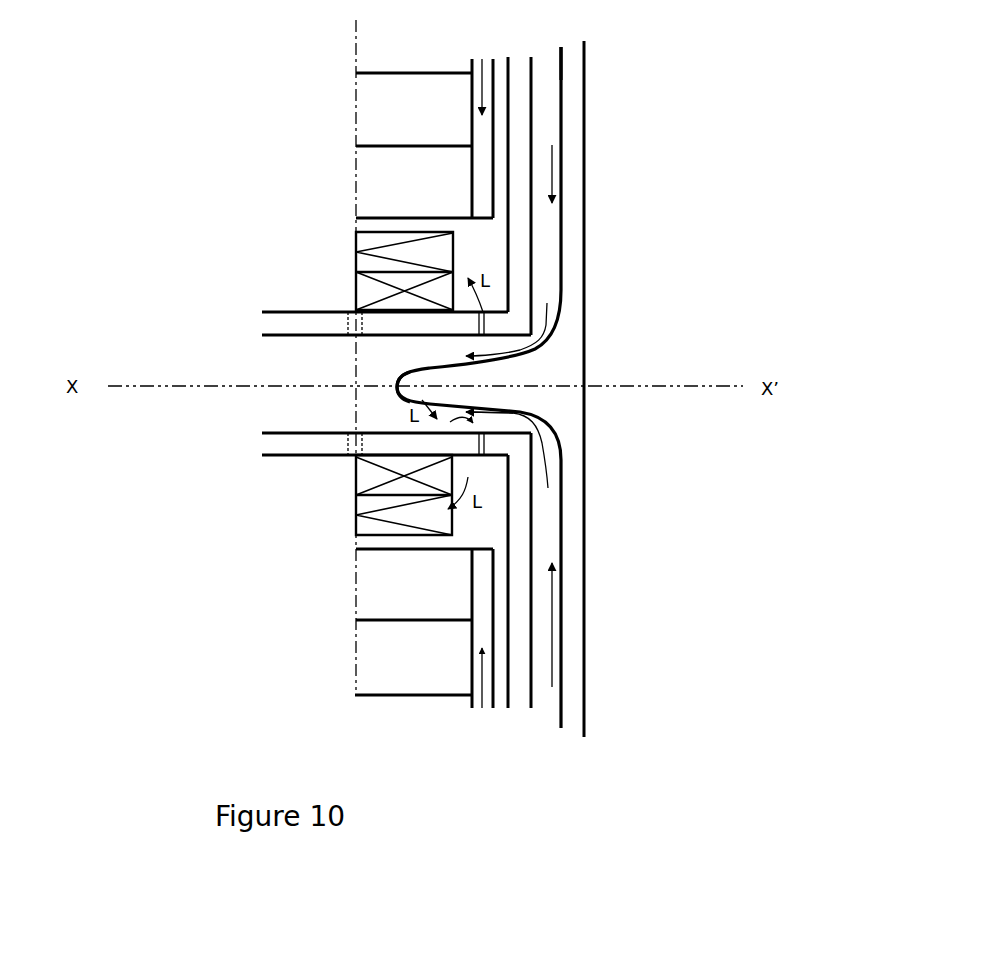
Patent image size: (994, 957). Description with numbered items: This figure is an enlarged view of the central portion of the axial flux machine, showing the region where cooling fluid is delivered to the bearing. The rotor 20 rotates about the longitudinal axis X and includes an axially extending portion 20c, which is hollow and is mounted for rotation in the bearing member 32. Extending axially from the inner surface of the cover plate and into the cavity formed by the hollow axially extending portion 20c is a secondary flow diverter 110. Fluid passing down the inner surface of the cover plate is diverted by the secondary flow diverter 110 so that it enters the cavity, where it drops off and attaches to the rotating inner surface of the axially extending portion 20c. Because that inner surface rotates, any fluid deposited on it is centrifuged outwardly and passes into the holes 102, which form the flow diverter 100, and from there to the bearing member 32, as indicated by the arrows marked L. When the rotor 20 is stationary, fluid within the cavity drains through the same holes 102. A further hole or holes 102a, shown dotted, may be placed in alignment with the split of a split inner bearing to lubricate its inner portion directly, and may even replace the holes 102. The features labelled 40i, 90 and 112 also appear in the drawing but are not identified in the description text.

The rotor 20 is at (521, 138).
The axially extending portion 20c is at (407, 447).
The bearing member 32 is at (390, 284).
The inlet 40i is at (557, 63).
The air passage 90 is at (495, 110).
The flow diverter 100 is at (487, 312).
The holes 102 is at (487, 323).
The further hole or holes 102a is at (347, 323).
The secondary flow diverter 110 is at (442, 371).
The deflector bend 112 is at (400, 368).